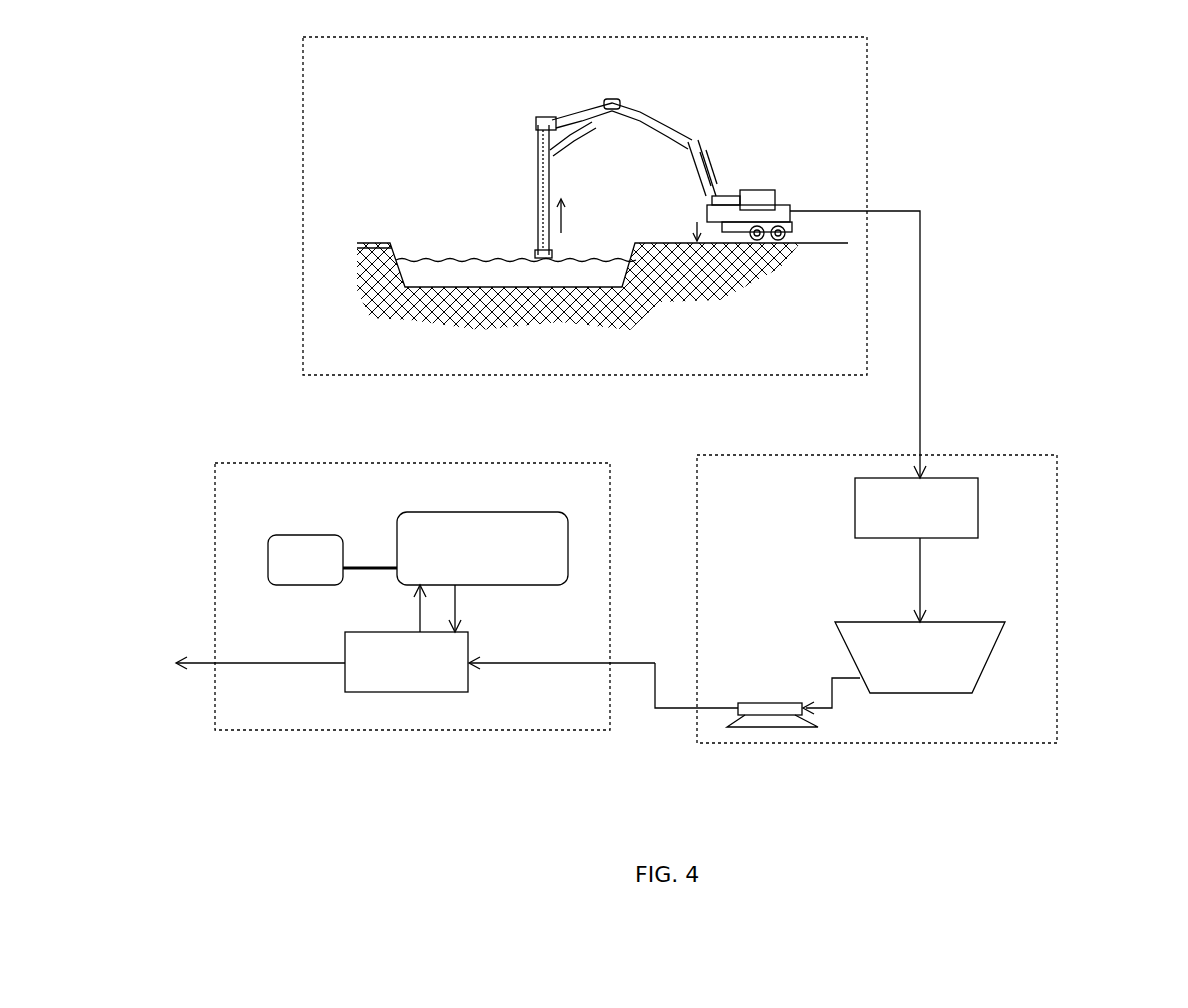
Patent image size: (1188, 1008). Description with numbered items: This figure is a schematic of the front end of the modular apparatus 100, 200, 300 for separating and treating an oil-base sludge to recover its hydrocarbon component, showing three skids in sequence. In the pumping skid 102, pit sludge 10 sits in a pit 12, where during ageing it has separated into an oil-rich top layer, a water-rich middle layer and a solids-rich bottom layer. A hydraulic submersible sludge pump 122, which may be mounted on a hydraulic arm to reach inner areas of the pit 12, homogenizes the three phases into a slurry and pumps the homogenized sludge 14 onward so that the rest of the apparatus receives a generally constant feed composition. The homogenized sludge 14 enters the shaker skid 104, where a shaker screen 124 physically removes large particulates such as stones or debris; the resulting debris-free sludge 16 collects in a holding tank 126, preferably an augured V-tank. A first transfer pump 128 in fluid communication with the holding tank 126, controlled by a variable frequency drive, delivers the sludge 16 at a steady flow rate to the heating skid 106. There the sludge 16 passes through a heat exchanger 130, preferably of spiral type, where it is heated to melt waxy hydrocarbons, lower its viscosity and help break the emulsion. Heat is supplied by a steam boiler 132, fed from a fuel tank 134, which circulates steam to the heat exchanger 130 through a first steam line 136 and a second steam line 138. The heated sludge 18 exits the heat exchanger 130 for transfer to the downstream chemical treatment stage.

The modular apparatus 100 is at (1080, 43).
The system 200 is at (1080, 43).
The system 300 is at (988, 58).
The pit sludge 10 is at (392, 223).
The pit 12 is at (655, 298).
The homogenized sludge 14 is at (920, 322).
The debris-free sludge 16 is at (920, 580).
The heated sludge 18 is at (268, 662).
The pumping skid 102 is at (846, 366).
The shaker skid 104 is at (1046, 732).
The heating skid 106 is at (598, 720).
The hydraulic submersible sludge pump 122 is at (537, 248).
The shaker screen 124 is at (936, 521).
The holding tank 126 is at (939, 673).
The first transfer pump 128 is at (776, 706).
The heat exchanger 130 is at (424, 676).
The steam boiler 132 is at (499, 564).
The fuel tank 134 is at (324, 573).
The first steam line 136 is at (455, 612).
The second steam line 138 is at (420, 612).